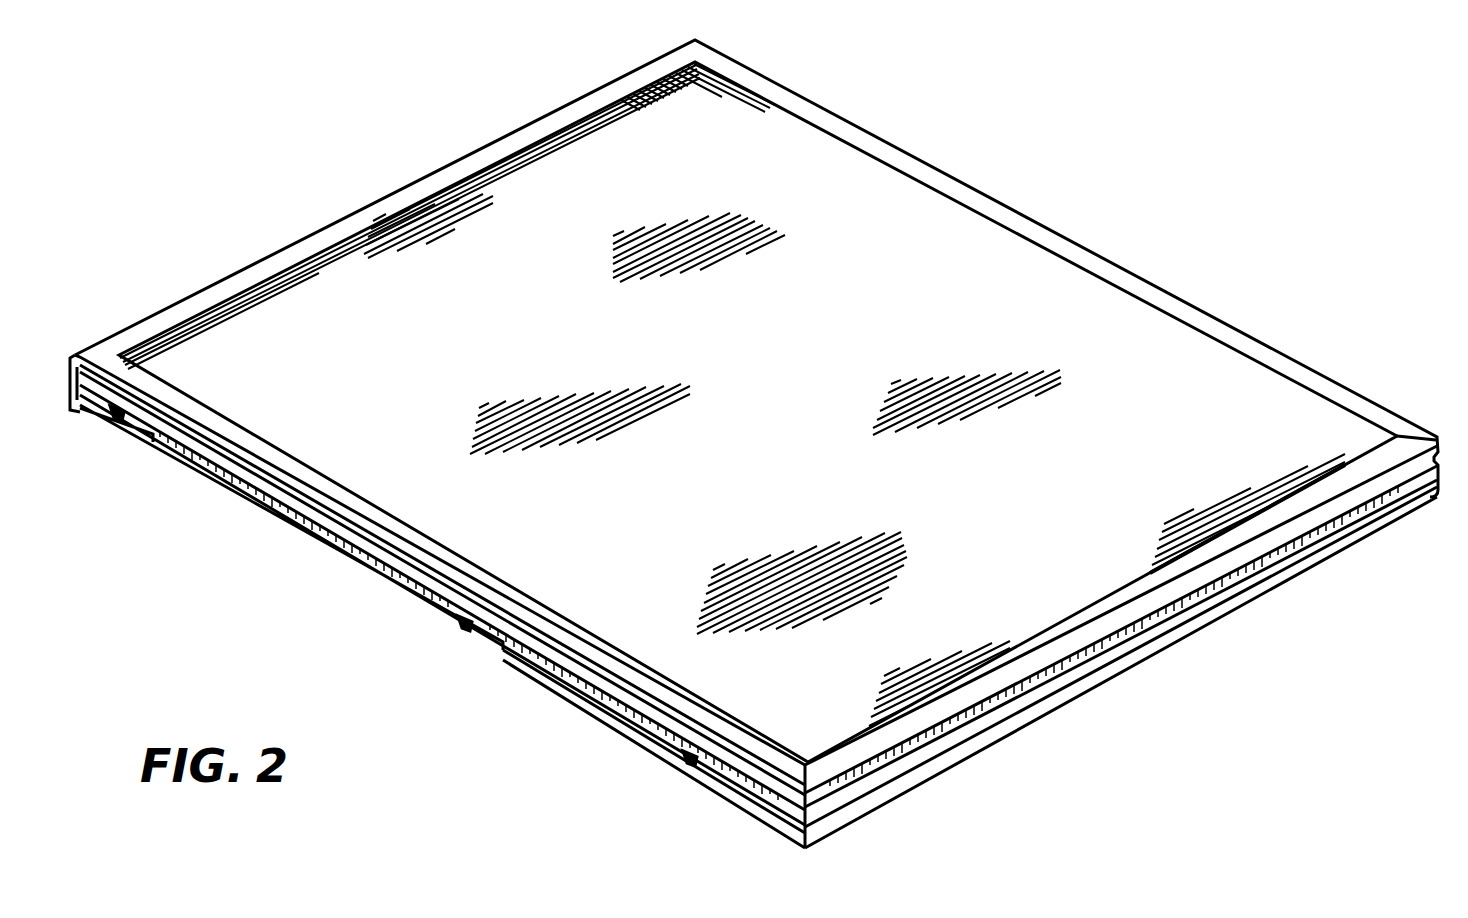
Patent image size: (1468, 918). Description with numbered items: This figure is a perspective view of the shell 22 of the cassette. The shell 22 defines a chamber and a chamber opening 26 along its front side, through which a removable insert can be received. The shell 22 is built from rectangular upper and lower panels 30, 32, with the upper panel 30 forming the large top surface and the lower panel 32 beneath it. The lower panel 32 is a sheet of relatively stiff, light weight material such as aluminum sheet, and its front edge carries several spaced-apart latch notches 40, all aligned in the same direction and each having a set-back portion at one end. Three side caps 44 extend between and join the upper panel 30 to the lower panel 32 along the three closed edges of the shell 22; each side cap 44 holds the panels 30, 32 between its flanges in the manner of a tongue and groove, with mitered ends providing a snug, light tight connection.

The shell 22 is at (1032, 190).
The side caps 44 is at (444, 162).
The upper panel 30 is at (780, 344).
The chamber opening 26 is at (281, 525).
The lower panel 32 is at (600, 703).
The latch notches 40 is at (122, 421).